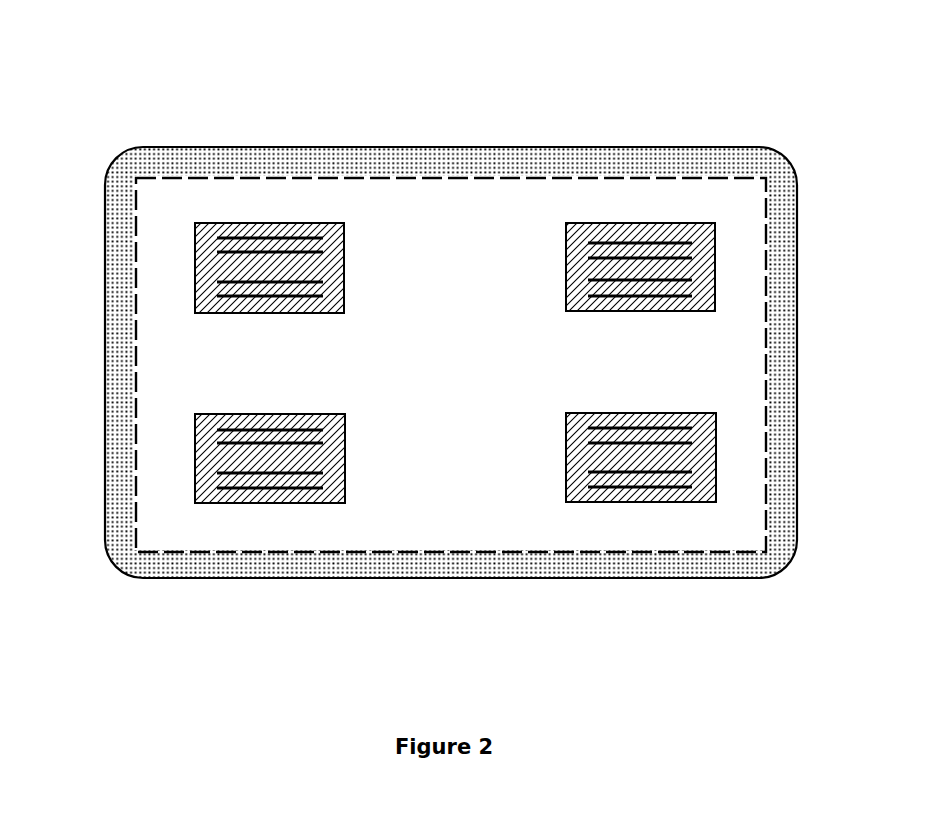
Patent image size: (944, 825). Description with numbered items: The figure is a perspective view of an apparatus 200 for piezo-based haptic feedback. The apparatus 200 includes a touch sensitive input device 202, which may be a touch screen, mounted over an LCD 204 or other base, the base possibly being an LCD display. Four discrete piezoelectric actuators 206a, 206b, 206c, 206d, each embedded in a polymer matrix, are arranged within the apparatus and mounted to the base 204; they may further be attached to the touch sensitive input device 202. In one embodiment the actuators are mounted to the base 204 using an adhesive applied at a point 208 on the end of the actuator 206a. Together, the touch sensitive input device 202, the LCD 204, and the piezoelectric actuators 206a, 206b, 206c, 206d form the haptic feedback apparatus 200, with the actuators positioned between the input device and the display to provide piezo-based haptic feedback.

The apparatus 200 is at (767, 127).
The touch sensitive input device 202 is at (392, 222).
The LCD 204 is at (573, 147).
The piezoelectric actuator 206a is at (712, 226).
The piezoelectric actuator 206b is at (217, 238).
The piezoelectric actuator 206c is at (700, 487).
The piezoelectric actuator 206d is at (217, 488).
The point 208 is at (728, 310).